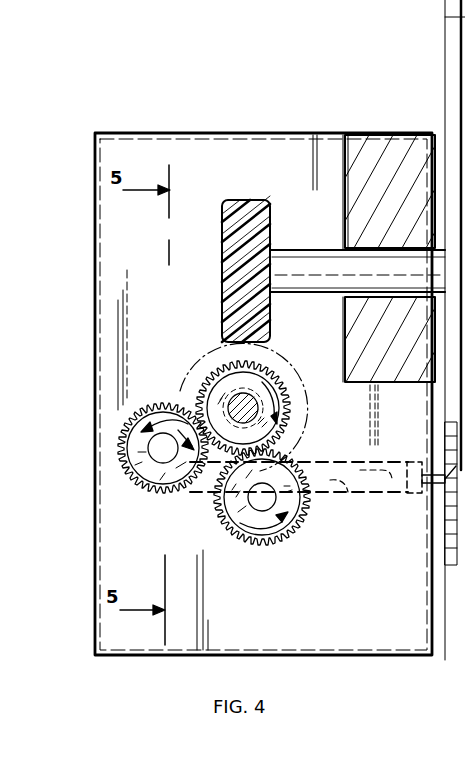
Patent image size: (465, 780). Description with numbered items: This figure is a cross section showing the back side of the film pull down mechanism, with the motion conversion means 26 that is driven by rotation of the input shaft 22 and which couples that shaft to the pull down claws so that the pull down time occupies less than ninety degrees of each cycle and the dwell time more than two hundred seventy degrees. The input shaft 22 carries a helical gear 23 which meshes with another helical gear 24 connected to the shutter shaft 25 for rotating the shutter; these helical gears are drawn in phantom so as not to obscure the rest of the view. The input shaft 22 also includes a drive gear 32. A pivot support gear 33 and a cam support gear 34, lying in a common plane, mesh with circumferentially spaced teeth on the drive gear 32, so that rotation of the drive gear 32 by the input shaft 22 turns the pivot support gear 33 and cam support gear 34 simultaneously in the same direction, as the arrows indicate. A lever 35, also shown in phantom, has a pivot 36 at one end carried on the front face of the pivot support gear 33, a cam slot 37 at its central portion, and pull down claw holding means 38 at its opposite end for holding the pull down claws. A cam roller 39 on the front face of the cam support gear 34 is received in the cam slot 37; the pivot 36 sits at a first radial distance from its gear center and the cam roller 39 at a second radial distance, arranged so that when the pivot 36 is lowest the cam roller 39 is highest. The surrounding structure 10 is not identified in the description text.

The fastener driving apparatus 10 is at (270, 133).
The input shaft 22 is at (243, 405).
The helical gear 23 is at (314, 420).
The helical gear 24 is at (255, 200).
The shutter shaft 25 is at (295, 262).
The motion conversion means 26 is at (80, 545).
The drive gear 32 is at (262, 372).
The pivot support gear 33 is at (168, 404).
The cam support gear 34 is at (270, 546).
The lever 35 is at (398, 495).
The pivot 36 is at (158, 500).
The cam slot 37 is at (344, 493).
The pull down claw holding means 38 is at (413, 460).
The cam roller 39 is at (310, 460).